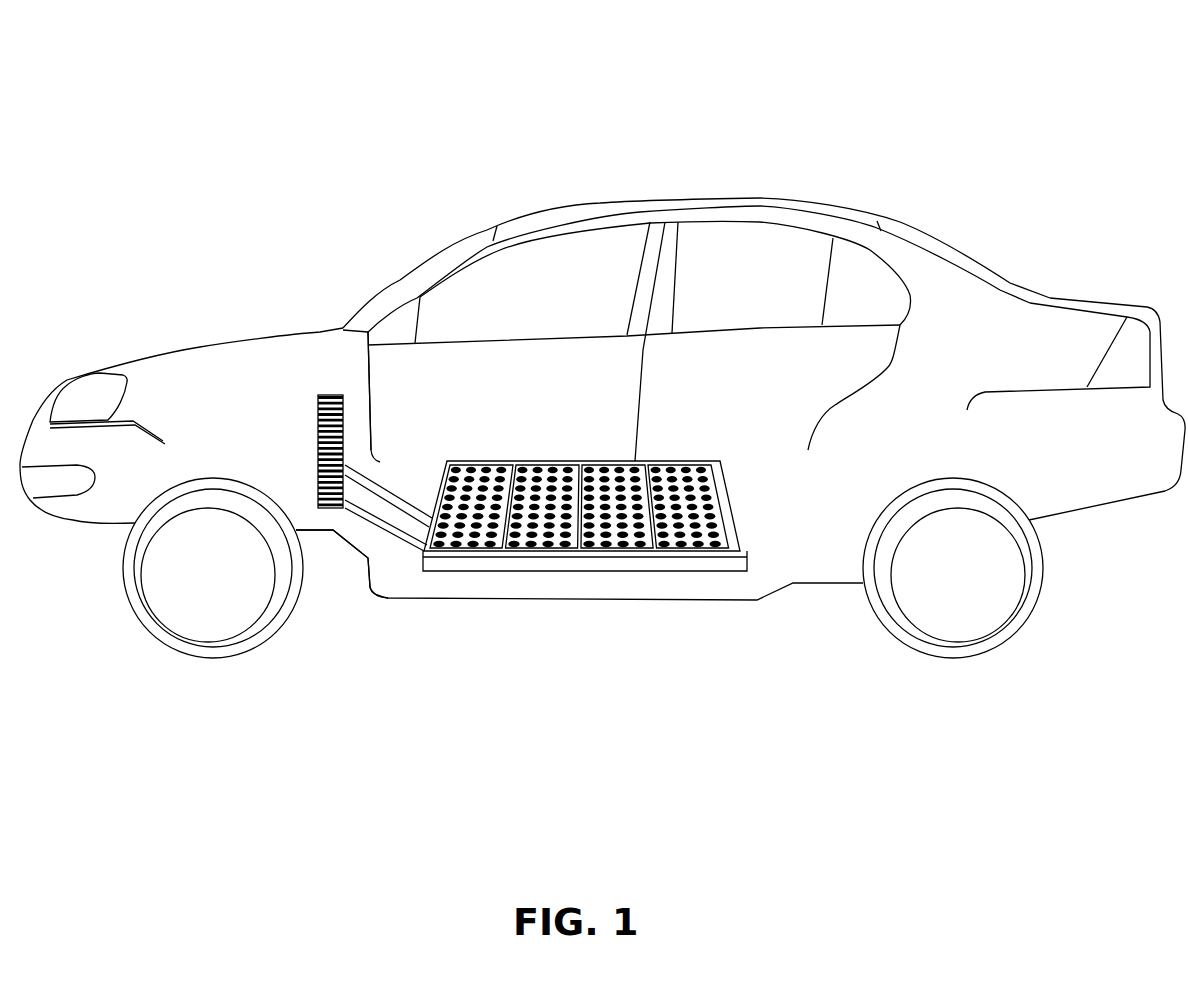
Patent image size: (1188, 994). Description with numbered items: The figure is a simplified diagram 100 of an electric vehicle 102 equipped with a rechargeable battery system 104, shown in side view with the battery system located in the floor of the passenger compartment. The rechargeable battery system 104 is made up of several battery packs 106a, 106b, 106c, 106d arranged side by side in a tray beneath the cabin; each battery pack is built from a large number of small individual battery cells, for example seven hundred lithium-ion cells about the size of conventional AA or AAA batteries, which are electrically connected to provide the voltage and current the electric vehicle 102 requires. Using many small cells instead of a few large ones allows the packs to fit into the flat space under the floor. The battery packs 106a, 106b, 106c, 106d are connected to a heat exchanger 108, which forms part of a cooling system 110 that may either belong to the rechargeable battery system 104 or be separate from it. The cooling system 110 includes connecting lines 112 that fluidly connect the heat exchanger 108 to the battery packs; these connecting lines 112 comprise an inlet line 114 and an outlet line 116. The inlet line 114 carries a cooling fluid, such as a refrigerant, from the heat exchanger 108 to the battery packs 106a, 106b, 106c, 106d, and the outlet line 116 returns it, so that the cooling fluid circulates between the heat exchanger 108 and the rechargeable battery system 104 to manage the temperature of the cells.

The simplified diagram 100 is at (1130, 96).
The electric vehicle 102 is at (670, 201).
The rechargeable battery system 104 is at (578, 572).
The battery pack 106a is at (461, 462).
The battery pack 106b is at (540, 463).
The battery pack 106c is at (637, 463).
The battery pack 106d is at (712, 462).
The heat exchanger 108 is at (318, 410).
The cooling system 110 is at (397, 408).
The connecting lines 112 is at (386, 560).
The inlet line 114 is at (395, 456).
The outlet line 116 is at (362, 546).